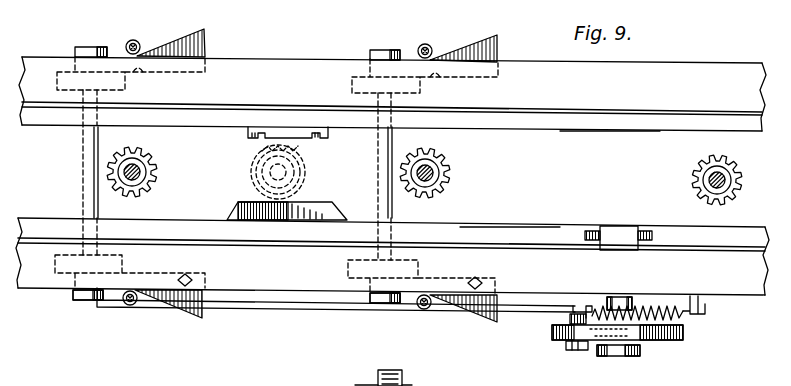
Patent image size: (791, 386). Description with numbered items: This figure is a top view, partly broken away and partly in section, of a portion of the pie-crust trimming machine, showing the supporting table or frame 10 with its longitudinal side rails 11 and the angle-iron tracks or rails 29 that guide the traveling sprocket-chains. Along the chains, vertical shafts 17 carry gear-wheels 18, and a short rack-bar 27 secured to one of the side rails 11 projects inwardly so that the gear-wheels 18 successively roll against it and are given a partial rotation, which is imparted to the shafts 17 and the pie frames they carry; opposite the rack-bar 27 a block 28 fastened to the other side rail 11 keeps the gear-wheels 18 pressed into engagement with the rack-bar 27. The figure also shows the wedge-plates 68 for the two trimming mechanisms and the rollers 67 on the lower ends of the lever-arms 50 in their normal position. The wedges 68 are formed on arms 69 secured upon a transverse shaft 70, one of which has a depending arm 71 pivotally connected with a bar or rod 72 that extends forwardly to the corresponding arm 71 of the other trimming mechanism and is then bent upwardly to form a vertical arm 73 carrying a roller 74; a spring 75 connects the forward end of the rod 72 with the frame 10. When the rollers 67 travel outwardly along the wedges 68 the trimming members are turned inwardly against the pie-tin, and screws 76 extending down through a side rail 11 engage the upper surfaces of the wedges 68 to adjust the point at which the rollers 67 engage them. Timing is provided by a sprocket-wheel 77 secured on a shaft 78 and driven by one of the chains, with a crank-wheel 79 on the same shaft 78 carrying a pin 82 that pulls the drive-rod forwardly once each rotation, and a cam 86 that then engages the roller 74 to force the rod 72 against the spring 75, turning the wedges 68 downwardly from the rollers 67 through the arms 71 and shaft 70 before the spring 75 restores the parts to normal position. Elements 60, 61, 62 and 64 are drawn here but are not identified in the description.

The supporting table or frame 10 is at (392, 80).
The longitudinal side rails 11 is at (392, 182).
The vertical shafts 17 is at (147, 170).
The gear-wheels 18 is at (152, 185).
The rack-bar 27 is at (278, 142).
The block 28 is at (236, 204).
The angle-iron tracks or rails 29 is at (602, 132).
The lever-arms 50 is at (130, 41).
The bottom block 60 is at (402, 372).
The bottom member 61 is at (426, 373).
The bottom plate 62 is at (362, 384).
The base member 64 is at (397, 377).
The rollers 67 is at (138, 42).
The wedge-plates 68 is at (206, 32).
The arms 69 is at (440, 276).
The transverse shaft 70 is at (82, 193).
The depending arm 71 is at (74, 296).
The bar or rod 72 is at (270, 310).
The vertical arm 73 is at (562, 316).
The roller 74 is at (576, 326).
The spring 75 is at (684, 318).
The screws 76 is at (192, 278).
The sprocket-wheel 77 is at (599, 228).
The shaft 78 is at (630, 298).
The crank-wheel 79 is at (660, 341).
The pin 82 is at (578, 352).
The cam 86 is at (648, 341).